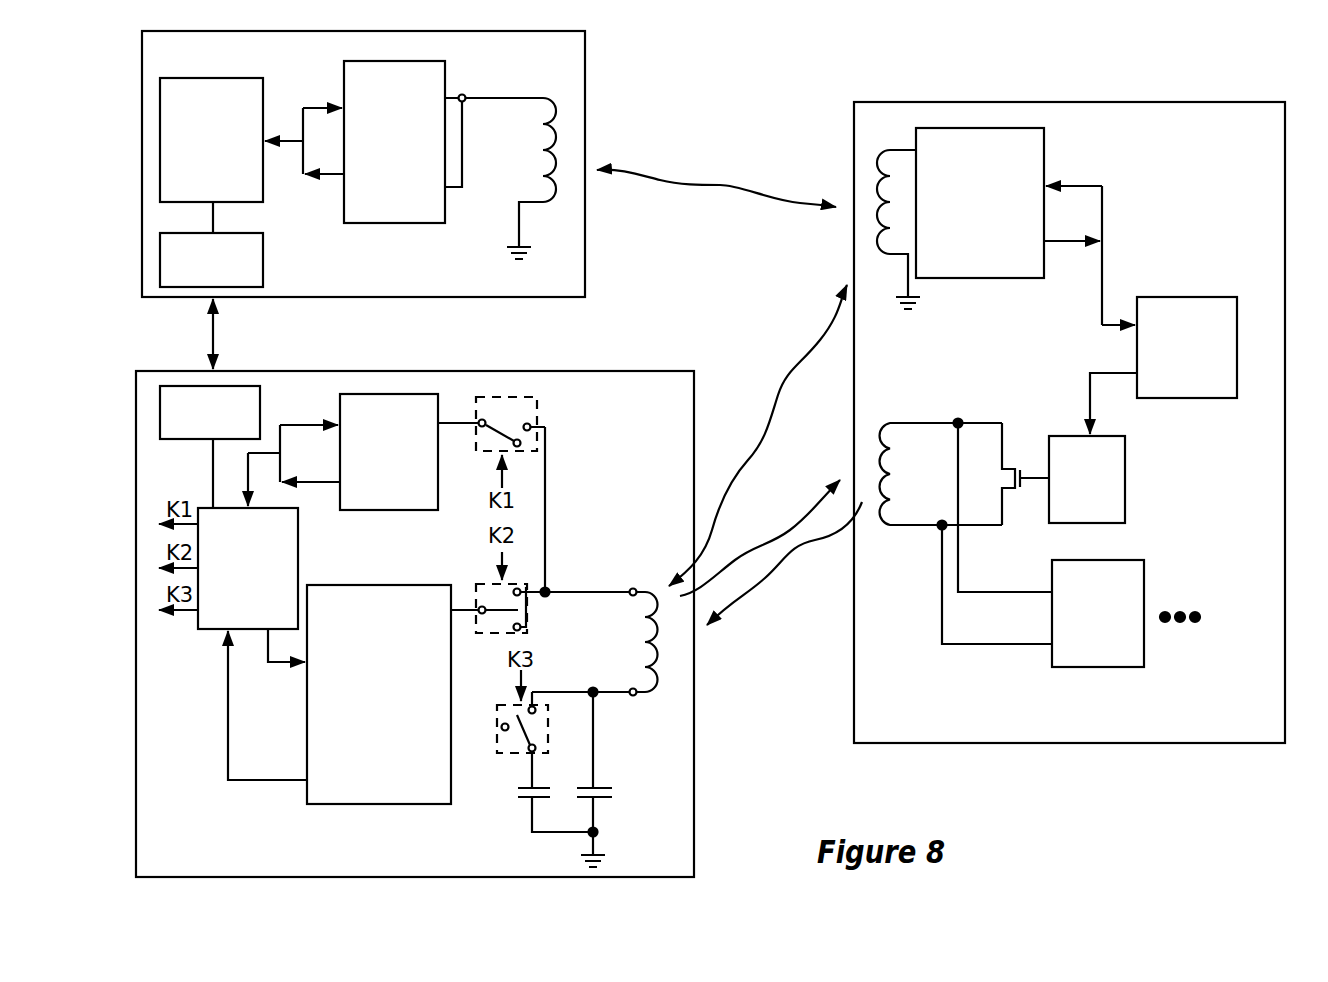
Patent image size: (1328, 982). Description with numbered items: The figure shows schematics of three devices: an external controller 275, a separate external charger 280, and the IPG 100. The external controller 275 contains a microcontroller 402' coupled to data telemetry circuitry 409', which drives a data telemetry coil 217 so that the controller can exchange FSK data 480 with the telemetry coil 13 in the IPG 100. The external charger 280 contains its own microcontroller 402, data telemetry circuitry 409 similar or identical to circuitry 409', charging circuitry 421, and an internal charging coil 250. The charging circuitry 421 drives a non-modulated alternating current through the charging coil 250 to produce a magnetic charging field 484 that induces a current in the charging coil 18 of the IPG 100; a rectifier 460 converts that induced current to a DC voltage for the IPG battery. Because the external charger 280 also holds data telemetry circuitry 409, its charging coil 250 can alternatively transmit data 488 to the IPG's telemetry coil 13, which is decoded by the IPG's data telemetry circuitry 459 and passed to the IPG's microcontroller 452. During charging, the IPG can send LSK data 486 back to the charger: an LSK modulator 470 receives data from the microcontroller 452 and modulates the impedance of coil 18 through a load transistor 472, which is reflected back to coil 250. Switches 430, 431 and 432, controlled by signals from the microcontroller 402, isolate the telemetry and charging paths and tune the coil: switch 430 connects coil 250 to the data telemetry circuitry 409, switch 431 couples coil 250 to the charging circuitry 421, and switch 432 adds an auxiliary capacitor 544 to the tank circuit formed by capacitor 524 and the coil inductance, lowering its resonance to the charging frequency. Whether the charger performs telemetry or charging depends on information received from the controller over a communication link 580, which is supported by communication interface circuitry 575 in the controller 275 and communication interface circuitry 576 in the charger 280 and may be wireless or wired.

The IPG 100 is at (1020, 99).
The telemetry coil 13 is at (890, 148).
The charging coil 18 is at (893, 421).
The data telemetry coil 217 is at (543, 92).
The charging coil 250 is at (644, 680).
The external controller 275 is at (140, 175).
The external charger 280 is at (134, 567).
The microcontroller 402 is at (248, 568).
The microcontroller 402' is at (211, 140).
The data telemetry circuitry 409 is at (389, 476).
The data telemetry circuitry 409' is at (394, 161).
The charging circuitry 421 is at (397, 807).
The switch 430 is at (541, 406).
The switch 431 is at (534, 625).
The switch 432 is at (518, 758).
The microcontroller 452 is at (1187, 347).
The data telemetry circuitry 459 is at (1018, 281).
The rectifier 460 is at (1098, 613).
The LSK modulator 470 is at (1087, 479).
The load transistor 472 is at (1027, 489).
The FSK data 480 is at (679, 180).
The magnetic charging field 484 is at (786, 516).
The LSK data 486 is at (783, 565).
The data 488 is at (775, 395).
The capacitor 524 is at (583, 779).
The auxiliary capacitor 544 is at (530, 800).
The communication interface circuitry 575 is at (211, 260).
The communication interface circuitry 576 is at (210, 412).
The communication link 580 is at (237, 334).